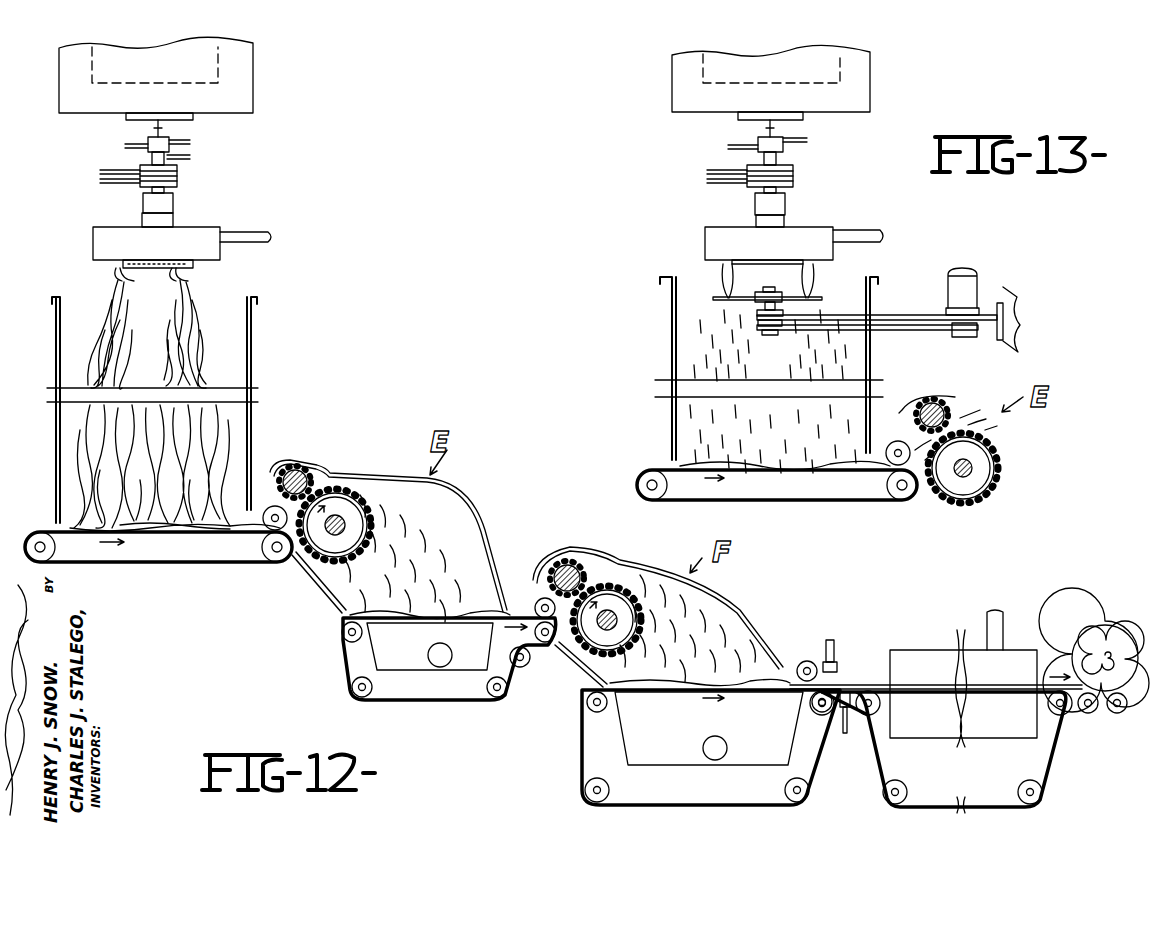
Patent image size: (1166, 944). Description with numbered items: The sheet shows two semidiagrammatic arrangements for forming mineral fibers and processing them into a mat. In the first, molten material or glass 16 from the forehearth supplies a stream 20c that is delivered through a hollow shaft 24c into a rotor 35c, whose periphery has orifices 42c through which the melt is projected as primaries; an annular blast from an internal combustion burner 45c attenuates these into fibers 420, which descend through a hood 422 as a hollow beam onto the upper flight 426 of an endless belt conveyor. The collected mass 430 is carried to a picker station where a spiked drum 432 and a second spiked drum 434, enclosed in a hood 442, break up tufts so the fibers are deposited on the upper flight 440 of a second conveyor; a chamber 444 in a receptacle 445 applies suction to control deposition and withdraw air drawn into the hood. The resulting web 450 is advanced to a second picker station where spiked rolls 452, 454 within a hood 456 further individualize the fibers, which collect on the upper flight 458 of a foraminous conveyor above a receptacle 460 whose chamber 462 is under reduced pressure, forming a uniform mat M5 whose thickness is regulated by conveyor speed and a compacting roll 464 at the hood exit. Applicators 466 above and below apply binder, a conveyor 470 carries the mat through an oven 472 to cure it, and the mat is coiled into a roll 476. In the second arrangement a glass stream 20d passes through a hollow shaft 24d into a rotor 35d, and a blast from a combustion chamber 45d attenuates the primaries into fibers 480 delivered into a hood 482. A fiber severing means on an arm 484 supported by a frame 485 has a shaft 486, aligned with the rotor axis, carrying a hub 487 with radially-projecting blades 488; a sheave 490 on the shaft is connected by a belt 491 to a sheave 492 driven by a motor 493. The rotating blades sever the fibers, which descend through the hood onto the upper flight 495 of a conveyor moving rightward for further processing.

In FIG. 12, the molten material or glass 16 is at (248, 69).
In FIG. 13, the molten material or glass 16 is at (867, 78).
In FIG. 12, the stream of glass 20c is at (165, 128).
In FIG. 12, the hollow shaft 24c is at (162, 188).
In FIG. 12, the internal combustion burner 45c is at (202, 230).
In FIG. 12, the rotor 35c is at (120, 273).
In FIG. 12, the orifices 42c is at (200, 275).
In FIG. 12, the fibers 420 is at (213, 332).
In FIG. 12, the hood 422 is at (251, 356).
In FIG. 12, the upper flight of endless belt conveyor 426 is at (160, 532).
In FIG. 12, the collected mass of fibers 430 is at (217, 528).
In FIG. 12, the drum or roll 432 is at (340, 500).
In FIG. 12, the second drum or roll 434 is at (295, 467).
In FIG. 12, the upper flight of second conveyor 440 is at (342, 613).
In FIG. 12, the hood or housing 442 is at (473, 507).
In FIG. 12, the chamber 444 is at (415, 660).
In FIG. 12, the receptacle 445 is at (412, 672).
In FIG. 12, the web or mat 450 is at (453, 613).
In FIG. 12, the spiked roll or drum 452 is at (608, 587).
In FIG. 12, the spiked roll or drum 454 is at (567, 560).
In FIG. 12, the hood 456 is at (733, 585).
In FIG. 12, the upper flight of foraminous conveyor 458 is at (652, 695).
In FIG. 12, the receptacle 460 is at (648, 765).
In FIG. 12, the chamber 462 is at (775, 735).
In FIG. 12, the compacting or sizing roll 464 is at (808, 663).
In FIG. 12, the applicators 466 is at (868, 610).
In FIG. 12, the mat M5 is at (872, 658).
In FIG. 12, the conveyor 470 is at (907, 698).
In FIG. 12, the oven or curing zone 472 is at (947, 643).
In FIG. 12, the roll 476 is at (1122, 621).
In FIG. 13, the stream of glass 20d is at (767, 132).
In FIG. 13, the hollow shaft 24d is at (778, 190).
In FIG. 13, the combustion chamber 45d is at (800, 232).
In FIG. 13, the rotor 35d is at (722, 268).
In FIG. 13, the fibers 480 is at (827, 268).
In FIG. 13, the hood 482 is at (672, 333).
In FIG. 13, the arm or member 484 is at (887, 312).
In FIG. 13, the frame 485 is at (1019, 300).
In FIG. 13, the shaft 486 is at (762, 310).
In FIG. 13, the hub member 487 is at (755, 295).
In FIG. 13, the fiber severing knives or blades 488 is at (793, 298).
In FIG. 13, the sheave 490 is at (782, 333).
In FIG. 13, the belt 491 is at (883, 330).
In FIG. 13, the sheave 492 is at (967, 337).
In FIG. 13, the motor 493 is at (968, 280).
In FIG. 13, the upper flight of conveyor 495 is at (763, 474).